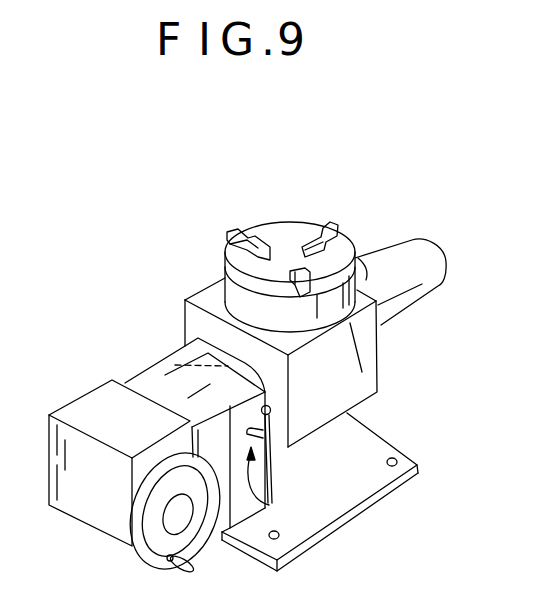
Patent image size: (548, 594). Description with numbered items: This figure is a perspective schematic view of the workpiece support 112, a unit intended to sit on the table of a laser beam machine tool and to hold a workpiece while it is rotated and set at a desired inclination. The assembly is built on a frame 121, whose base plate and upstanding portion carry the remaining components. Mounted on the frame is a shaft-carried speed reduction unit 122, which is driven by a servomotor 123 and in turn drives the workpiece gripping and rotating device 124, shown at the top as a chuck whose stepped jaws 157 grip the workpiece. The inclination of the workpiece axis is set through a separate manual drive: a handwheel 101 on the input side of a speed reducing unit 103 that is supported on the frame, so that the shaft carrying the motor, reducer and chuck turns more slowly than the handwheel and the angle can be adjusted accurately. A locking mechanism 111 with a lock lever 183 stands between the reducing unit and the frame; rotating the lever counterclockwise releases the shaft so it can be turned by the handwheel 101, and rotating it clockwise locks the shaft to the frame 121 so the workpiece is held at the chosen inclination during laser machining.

The handwheel 101 is at (146, 566).
The speed reducing unit 103 is at (75, 400).
The locking mechanism 111 is at (258, 427).
The workpiece support 112 is at (178, 321).
The frame 121 is at (360, 514).
The speed reduction unit 122 is at (379, 348).
The servomotor 123 is at (370, 260).
The workpiece gripping and rotating device 124 is at (225, 271).
The stepped jaws 157 is at (322, 222).
The lock lever 183 is at (272, 468).